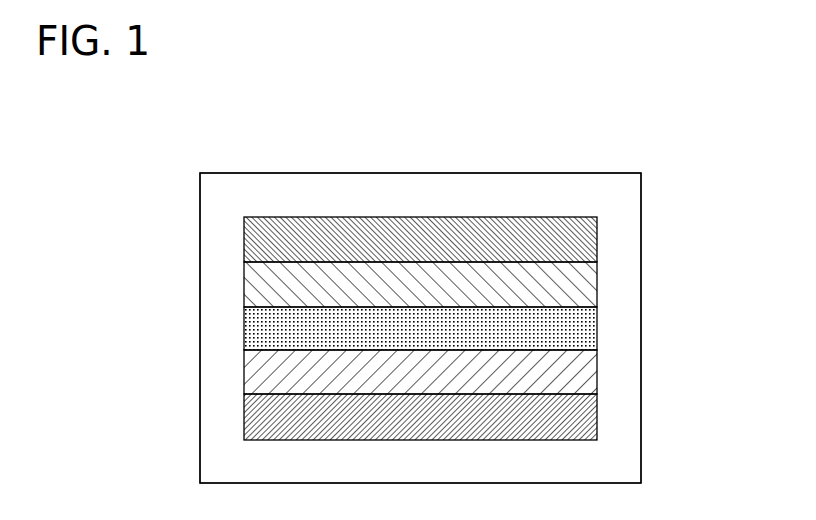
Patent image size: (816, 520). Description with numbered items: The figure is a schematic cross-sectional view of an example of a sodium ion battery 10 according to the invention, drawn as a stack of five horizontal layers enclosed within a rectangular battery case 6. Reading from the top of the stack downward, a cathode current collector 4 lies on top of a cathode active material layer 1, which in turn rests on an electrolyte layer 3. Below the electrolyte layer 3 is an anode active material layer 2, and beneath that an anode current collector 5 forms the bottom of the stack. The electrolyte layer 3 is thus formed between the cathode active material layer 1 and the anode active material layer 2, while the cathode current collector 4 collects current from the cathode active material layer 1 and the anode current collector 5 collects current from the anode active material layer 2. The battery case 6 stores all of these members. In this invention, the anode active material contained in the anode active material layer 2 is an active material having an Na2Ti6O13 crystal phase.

The sodium ion battery 10 is at (617, 150).
The battery case 6 is at (612, 203).
The cathode current collector 4 is at (571, 245).
The cathode active material layer 1 is at (570, 289).
The electrolyte layer 3 is at (568, 334).
The anode active material layer 2 is at (568, 379).
The anode current collector 5 is at (568, 423).